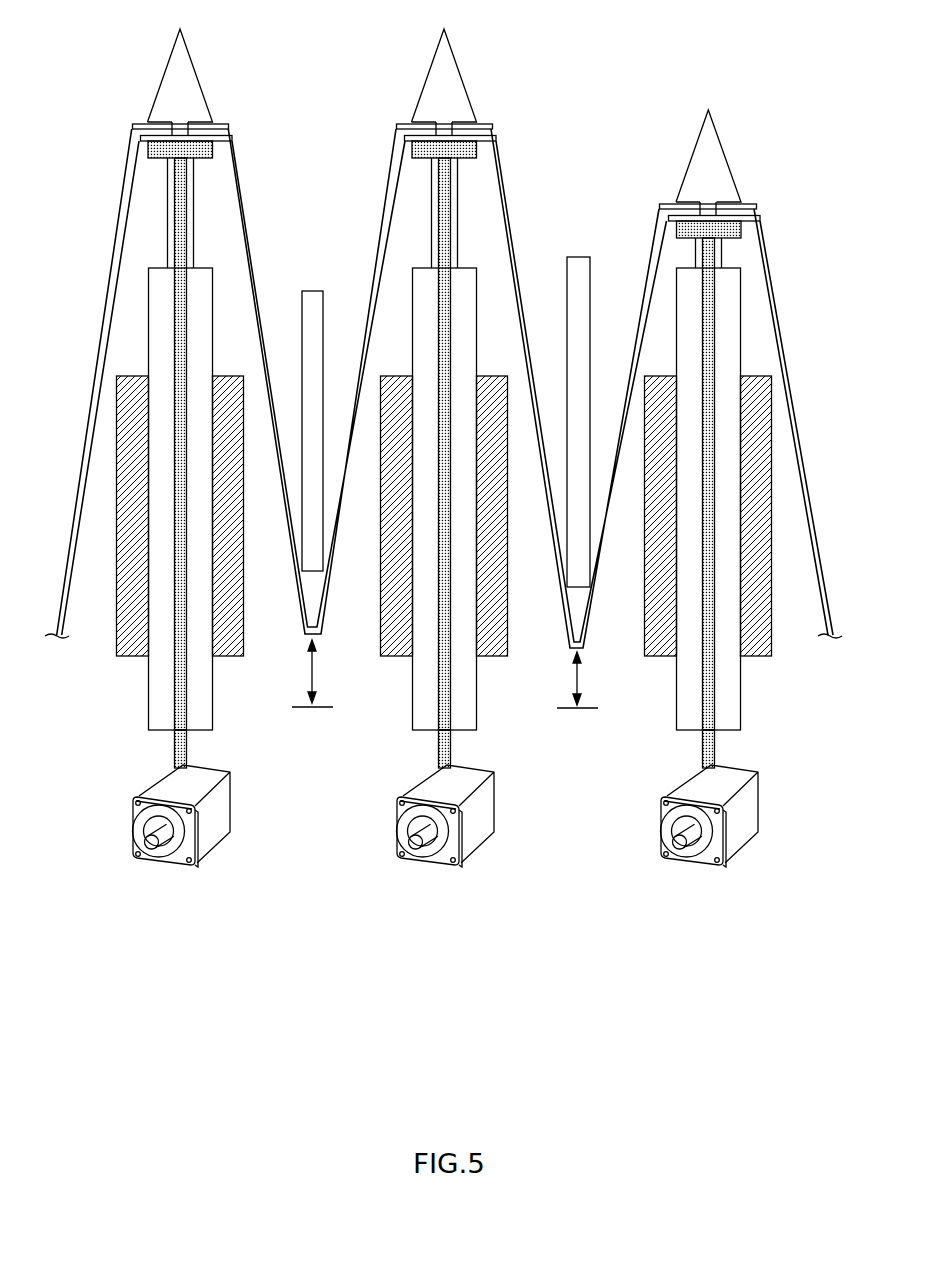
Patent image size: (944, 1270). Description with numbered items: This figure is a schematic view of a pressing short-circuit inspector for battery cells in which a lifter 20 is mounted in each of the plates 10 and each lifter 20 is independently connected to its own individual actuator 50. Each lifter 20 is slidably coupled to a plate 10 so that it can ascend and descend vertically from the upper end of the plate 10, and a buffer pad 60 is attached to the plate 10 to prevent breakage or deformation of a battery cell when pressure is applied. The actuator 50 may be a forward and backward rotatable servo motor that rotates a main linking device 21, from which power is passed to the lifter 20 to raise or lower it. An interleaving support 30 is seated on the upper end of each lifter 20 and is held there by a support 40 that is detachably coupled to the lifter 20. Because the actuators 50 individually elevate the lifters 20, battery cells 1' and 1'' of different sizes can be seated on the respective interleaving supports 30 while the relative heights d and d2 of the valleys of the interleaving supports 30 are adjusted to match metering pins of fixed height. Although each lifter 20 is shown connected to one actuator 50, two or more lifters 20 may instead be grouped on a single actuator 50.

The plate 10 is at (197, 313).
The lifter 20 is at (178, 643).
The main linking device 21 is at (180, 755).
The interleaving support 30 is at (774, 308).
The support 40 is at (707, 170).
The actuator 50 is at (222, 813).
The buffer pad 60 is at (230, 655).
The battery cell 1' is at (321, 394).
The battery cell 1'' is at (588, 383).
The relative height d is at (316, 673).
The relative height d2 is at (584, 680).